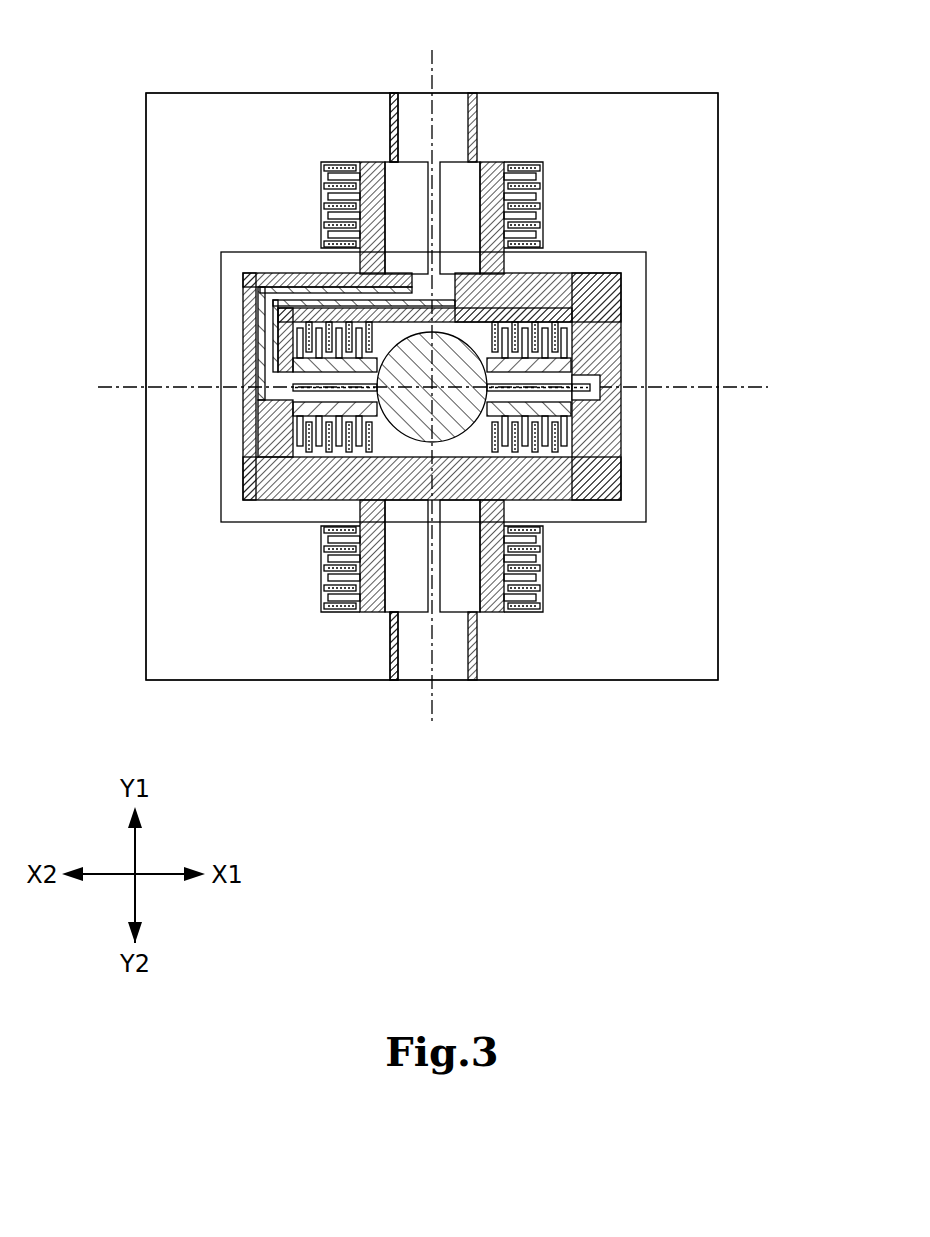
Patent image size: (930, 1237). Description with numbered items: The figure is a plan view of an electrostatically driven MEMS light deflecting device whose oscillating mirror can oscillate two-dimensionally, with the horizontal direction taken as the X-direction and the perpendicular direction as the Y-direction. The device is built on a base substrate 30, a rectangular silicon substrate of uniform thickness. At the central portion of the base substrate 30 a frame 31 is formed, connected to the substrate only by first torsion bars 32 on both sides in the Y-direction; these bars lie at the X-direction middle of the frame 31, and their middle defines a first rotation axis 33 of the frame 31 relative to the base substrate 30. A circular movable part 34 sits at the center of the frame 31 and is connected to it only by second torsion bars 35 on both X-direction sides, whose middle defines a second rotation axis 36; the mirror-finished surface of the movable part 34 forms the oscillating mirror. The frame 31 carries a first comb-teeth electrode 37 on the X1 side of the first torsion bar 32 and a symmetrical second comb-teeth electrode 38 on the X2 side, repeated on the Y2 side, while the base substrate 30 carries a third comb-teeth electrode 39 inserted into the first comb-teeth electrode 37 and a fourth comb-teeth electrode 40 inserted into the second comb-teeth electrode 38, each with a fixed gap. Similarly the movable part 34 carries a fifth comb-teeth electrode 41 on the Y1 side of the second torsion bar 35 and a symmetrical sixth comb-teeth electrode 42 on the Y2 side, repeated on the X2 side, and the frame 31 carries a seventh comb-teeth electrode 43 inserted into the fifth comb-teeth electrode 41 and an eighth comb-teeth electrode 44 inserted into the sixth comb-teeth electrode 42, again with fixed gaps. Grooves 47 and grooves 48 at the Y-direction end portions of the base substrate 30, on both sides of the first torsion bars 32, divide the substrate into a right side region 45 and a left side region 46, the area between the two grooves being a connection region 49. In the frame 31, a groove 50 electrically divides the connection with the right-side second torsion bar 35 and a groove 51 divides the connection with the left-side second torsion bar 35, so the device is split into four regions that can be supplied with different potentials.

The base substrate 30 is at (718, 152).
The frame 31 is at (622, 292).
The first torsion bar 32 is at (440, 208).
The first rotation axis 33 is at (444, 58).
The movable part 34 is at (405, 452).
The second torsion bar 35 is at (330, 393).
The second rotation axis 36 is at (110, 385).
The first comb-teeth electrode 37 is at (522, 183).
The second comb-teeth electrode 38 is at (340, 182).
The third comb-teeth electrode 39 is at (533, 237).
The fourth comb-teeth electrode 40 is at (326, 240).
The fifth comb-teeth electrode 41 is at (282, 362).
The sixth comb-teeth electrode 42 is at (312, 428).
The seventh comb-teeth electrode 43 is at (300, 340).
The eighth comb-teeth electrode 44 is at (290, 458).
The right side region 45 is at (700, 197).
The left side region 46 is at (165, 173).
The groove 47 is at (478, 112).
The groove 48 is at (390, 102).
The connection region 49 is at (410, 104).
The groove 50 is at (600, 395).
The groove 51 is at (278, 318).